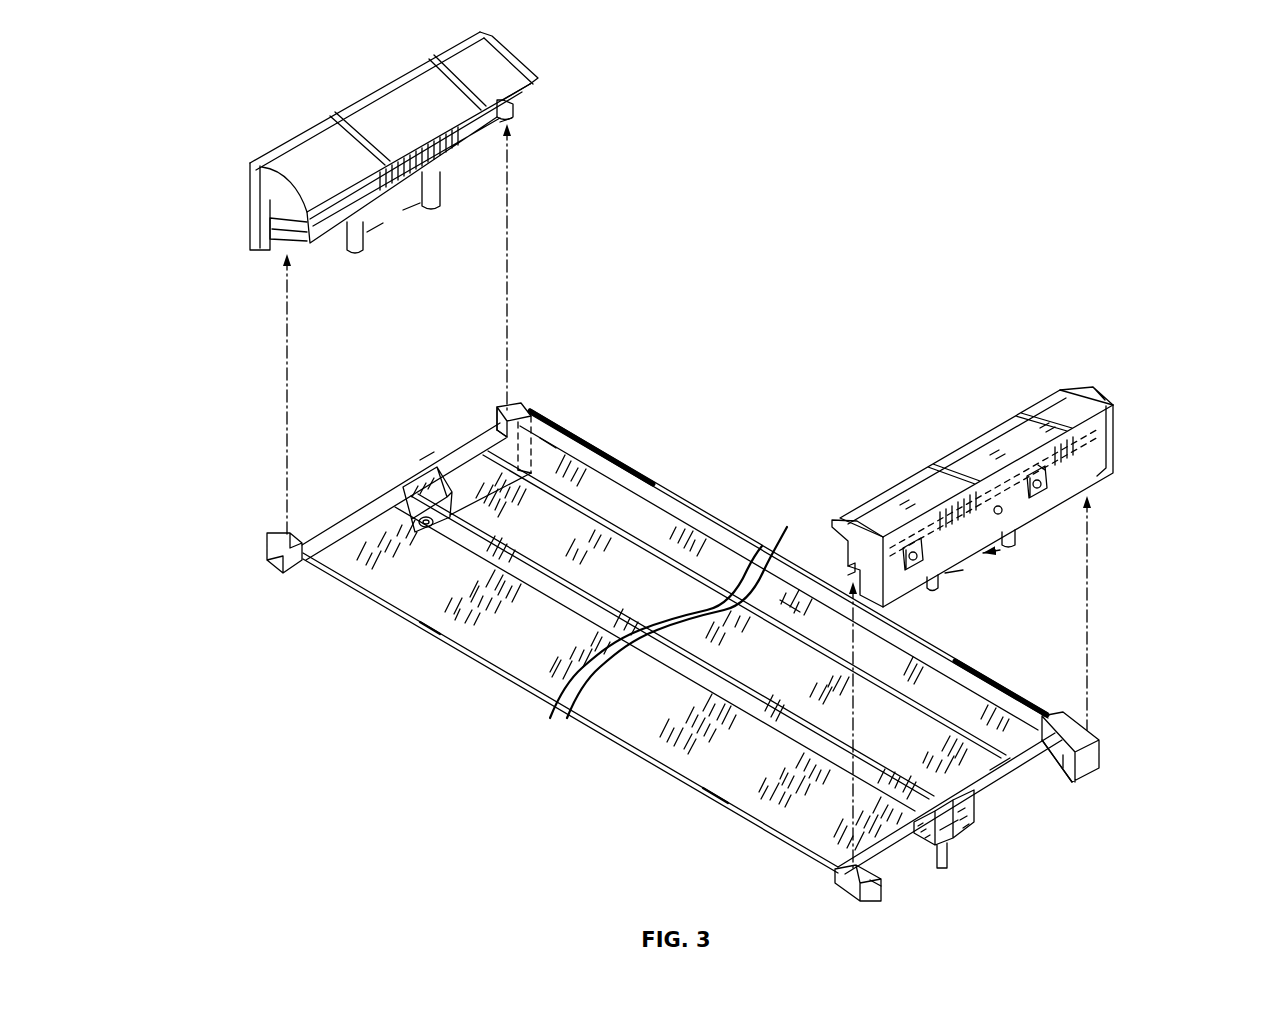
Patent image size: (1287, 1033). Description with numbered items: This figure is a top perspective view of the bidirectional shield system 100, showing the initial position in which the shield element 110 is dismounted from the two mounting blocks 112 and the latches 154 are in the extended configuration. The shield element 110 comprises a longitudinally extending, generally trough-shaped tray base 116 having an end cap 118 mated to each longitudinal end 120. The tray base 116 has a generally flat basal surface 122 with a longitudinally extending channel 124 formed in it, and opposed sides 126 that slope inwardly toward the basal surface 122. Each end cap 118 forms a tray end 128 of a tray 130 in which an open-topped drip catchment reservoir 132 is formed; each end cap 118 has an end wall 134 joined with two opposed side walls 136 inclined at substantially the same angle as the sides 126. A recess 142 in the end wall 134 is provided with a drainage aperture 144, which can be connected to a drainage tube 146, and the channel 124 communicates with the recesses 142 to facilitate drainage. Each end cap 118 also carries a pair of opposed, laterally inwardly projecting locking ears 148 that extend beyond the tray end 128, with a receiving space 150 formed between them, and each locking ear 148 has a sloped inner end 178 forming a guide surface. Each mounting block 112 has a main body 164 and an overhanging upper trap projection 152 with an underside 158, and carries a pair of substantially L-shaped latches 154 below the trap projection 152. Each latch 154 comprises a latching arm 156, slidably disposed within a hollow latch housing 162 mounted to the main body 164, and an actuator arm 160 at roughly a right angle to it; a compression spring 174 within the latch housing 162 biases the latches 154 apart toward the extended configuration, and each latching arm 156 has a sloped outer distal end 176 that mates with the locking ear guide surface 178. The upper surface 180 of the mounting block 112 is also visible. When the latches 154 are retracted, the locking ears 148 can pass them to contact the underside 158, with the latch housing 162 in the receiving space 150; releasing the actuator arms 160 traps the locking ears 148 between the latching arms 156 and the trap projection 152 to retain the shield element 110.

The assembly 100 is at (378, 738).
The shield element 110 is at (515, 690).
The mounting block 112 is at (333, 106).
The tray base 116 is at (700, 525).
The end cap 118 is at (507, 405).
The longitudinal end 120 is at (360, 555).
The basal surface 122 is at (655, 591).
The longitudinally extending channel 124 is at (753, 716).
The sides 126 is at (675, 520).
The tray end 128 is at (382, 495).
The tray 130 is at (742, 522).
The drip catchment reservoir 132 is at (786, 600).
The end wall 134 is at (532, 405).
The side walls 136 is at (548, 443).
The recess 142 is at (427, 505).
The drainage aperture 144 is at (430, 530).
The drainage tube 146 is at (956, 852).
The locking ears 148 is at (508, 406).
The receiving space 150 is at (427, 455).
The trap projection 152 is at (518, 54).
The latches 154 is at (453, 195).
The latching arm 156 is at (507, 113).
The underside 158 is at (528, 87).
The actuator arm 160 is at (428, 208).
The latch housing 162 is at (473, 145).
The main body 164 is at (260, 235).
The compression spring 174 is at (985, 470).
The sloped outer distal end 176 is at (512, 110).
The sloped inner end 178 is at (493, 413).
The top surface 180 is at (372, 146).